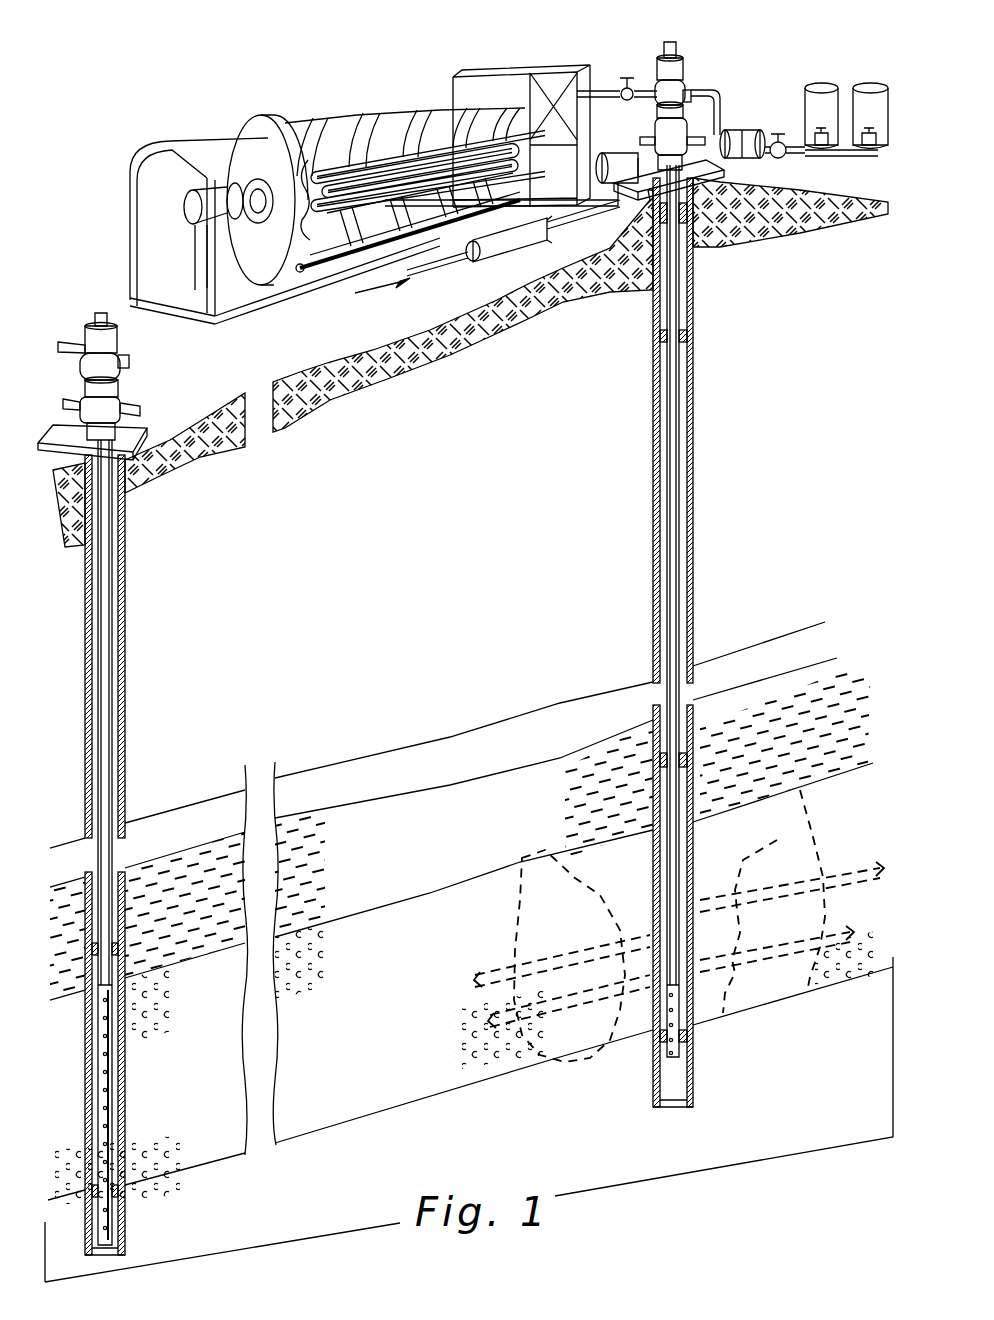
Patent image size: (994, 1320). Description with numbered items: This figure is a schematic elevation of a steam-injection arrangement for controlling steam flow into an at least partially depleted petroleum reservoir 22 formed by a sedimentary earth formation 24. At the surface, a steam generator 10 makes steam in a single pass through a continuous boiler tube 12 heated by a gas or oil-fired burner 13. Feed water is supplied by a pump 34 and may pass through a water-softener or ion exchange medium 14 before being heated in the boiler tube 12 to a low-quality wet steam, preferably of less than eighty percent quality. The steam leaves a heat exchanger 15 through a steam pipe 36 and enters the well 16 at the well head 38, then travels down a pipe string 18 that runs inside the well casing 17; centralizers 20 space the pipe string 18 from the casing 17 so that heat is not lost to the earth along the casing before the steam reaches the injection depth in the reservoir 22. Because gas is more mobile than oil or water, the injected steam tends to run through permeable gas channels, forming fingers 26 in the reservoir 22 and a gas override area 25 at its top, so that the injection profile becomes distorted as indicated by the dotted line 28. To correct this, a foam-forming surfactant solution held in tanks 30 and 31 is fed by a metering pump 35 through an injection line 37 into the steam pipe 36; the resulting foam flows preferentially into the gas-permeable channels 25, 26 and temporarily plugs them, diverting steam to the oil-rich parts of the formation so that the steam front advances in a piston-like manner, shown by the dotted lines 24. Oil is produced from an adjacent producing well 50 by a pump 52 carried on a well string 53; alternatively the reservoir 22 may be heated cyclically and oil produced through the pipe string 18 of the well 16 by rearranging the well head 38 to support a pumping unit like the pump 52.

The steam generator 10 is at (282, 92).
The boiler tube 12 is at (318, 170).
The burner 13 is at (245, 222).
The ion exchange medium 14 is at (505, 240).
The heat exchanger 15 is at (531, 66).
The well 16 is at (672, 636).
The well casing 17 is at (693, 305).
The pipe string 18 is at (678, 268).
The centralizers 20 is at (700, 210).
The reservoir 22 is at (382, 1003).
The earth formation 24 is at (430, 890).
The gas override area 25 is at (495, 877).
The fingers 26 is at (508, 960).
The distorted injection profile 28 is at (572, 882).
The tank 30 is at (826, 83).
The tank 31 is at (876, 83).
The pump 34 is at (609, 152).
The metering pump 35 is at (742, 128).
The steam pipe 36 is at (594, 84).
The injection line 37 is at (722, 82).
The well head 38 is at (684, 44).
The producing well 50 is at (126, 756).
The pump 52 is at (126, 1080).
The well string 53 is at (118, 882).